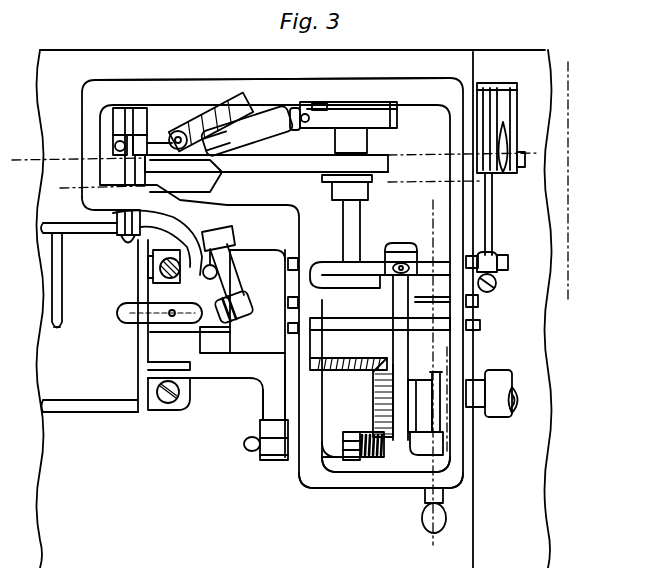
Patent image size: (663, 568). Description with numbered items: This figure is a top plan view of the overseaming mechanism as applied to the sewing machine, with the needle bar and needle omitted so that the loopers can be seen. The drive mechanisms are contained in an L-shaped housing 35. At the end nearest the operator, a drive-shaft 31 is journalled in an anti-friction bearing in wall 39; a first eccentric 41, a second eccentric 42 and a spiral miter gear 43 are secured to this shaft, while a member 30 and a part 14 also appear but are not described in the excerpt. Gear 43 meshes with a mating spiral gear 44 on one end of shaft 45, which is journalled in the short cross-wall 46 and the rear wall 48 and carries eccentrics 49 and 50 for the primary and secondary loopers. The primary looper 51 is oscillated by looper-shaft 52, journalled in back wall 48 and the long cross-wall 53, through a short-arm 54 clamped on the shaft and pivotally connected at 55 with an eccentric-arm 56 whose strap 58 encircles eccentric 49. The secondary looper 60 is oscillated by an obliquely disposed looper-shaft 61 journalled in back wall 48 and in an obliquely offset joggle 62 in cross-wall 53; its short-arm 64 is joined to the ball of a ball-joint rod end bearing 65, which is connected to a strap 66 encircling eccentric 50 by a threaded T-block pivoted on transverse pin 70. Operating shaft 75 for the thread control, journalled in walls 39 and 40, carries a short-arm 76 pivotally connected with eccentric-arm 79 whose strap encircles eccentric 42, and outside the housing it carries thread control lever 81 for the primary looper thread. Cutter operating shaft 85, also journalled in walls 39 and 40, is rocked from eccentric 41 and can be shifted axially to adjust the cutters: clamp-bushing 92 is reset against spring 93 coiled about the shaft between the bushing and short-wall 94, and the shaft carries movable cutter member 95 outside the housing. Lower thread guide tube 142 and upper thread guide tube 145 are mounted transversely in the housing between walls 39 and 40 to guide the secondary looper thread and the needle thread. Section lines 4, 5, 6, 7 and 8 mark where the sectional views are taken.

The section line 4- 4 is at (60, 185).
The section line 5- 5 is at (12, 157).
The section line 6- 6 is at (446, 347).
The section line 7- 7 is at (419, 200).
The section line 8- 8 is at (567, 62).
The shaft bearing 14 is at (152, 270).
The knob 30 is at (495, 373).
The drive-shaft 31 is at (477, 410).
The L-shaped housing 35 is at (302, 489).
The wall 39 is at (462, 465).
The wall 40 is at (310, 465).
The first eccentric 41 is at (397, 462).
The second eccentric 42 is at (373, 450).
The spiral miter gear 43 is at (378, 406).
The mating spiral gear 44 is at (345, 371).
The shaft 45 is at (360, 215).
The short cross-wall 46 is at (330, 300).
The rear wall 48 is at (355, 88).
The eccentric 49 is at (372, 190).
The eccentric 50 is at (390, 125).
The primary looper 51 is at (118, 313).
The looper-shaft 52 is at (127, 243).
The long cross-wall 53 is at (120, 198).
The short-arm 54 is at (150, 142).
The pivotal connection 55 is at (165, 157).
The eccentric-arm 56 is at (265, 173).
The strap 58 is at (388, 163).
The secondary looper 60 is at (190, 318).
The obliquely disposed looper-shaft 61 is at (230, 258).
The obliquely offset joggle 62 is at (232, 245).
The short-arm 64 is at (212, 120).
The ball-joint rod end bearing 65 is at (283, 117).
The strap 66 is at (372, 116).
The transverse pin 70 is at (305, 122).
The operating shaft 75 is at (500, 255).
The short-arm 76 is at (400, 248).
The eccentric-arm 79 is at (398, 337).
The thread control lever 81 is at (493, 193).
The cutter operating shaft 85 is at (247, 443).
The clamp-bushing 92 is at (346, 464).
The spring 93 is at (378, 455).
The short-wall 94 is at (395, 465).
The movable cutter member 95 is at (268, 405).
The lower thread guide tube 142 is at (493, 296).
The upper thread guide tube 145 is at (487, 323).